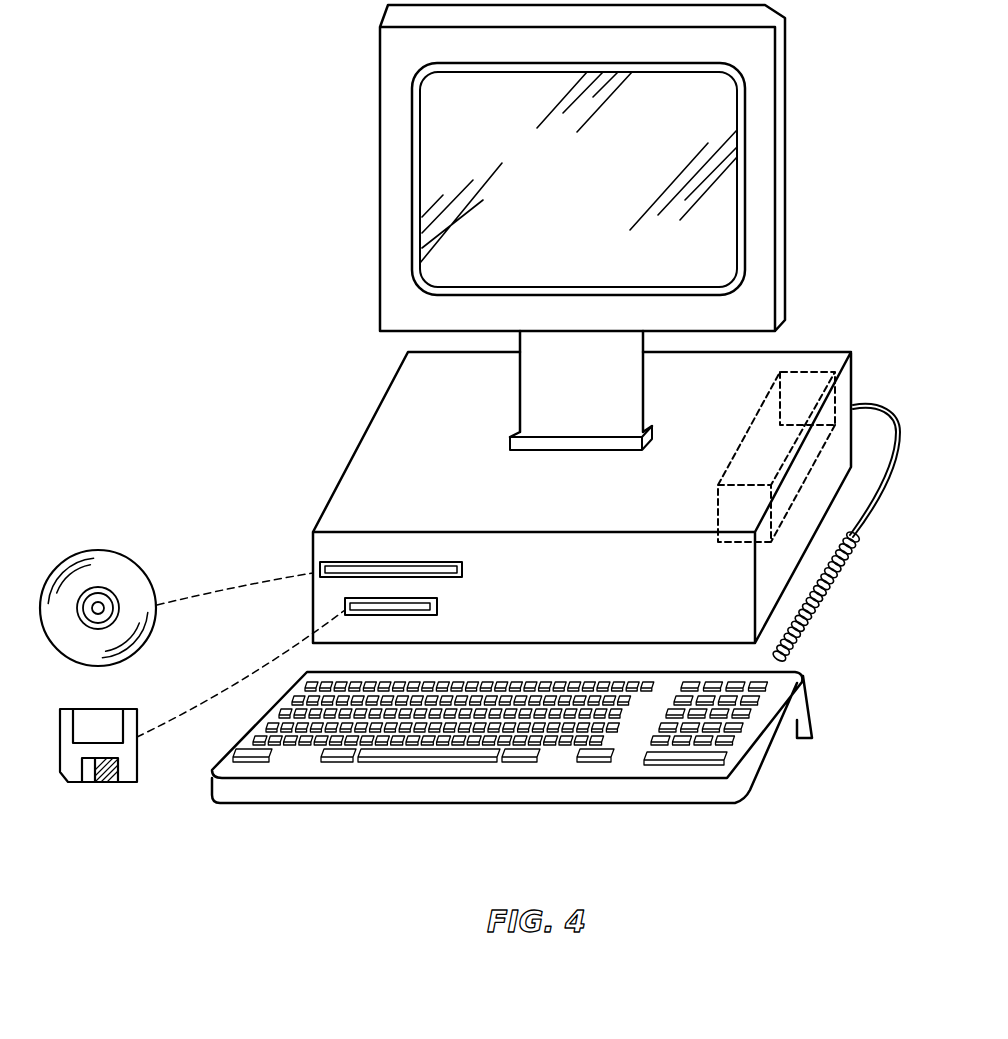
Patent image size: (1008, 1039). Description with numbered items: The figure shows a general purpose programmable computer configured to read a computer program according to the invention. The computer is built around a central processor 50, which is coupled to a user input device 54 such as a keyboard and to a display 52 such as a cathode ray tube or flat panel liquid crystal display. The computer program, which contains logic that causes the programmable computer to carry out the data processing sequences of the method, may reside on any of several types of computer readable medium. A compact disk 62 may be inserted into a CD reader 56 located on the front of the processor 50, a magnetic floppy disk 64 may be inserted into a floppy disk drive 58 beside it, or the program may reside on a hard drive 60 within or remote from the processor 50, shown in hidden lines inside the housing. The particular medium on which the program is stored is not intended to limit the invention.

The central processor 50 is at (358, 447).
The display 52 is at (786, 188).
The user input device 54 is at (457, 803).
The CD reader 56 is at (462, 570).
The floppy disk drive 58 is at (437, 607).
The hard drive 60 is at (717, 493).
The compact disk 62 is at (98, 550).
The magnetic floppy disk 64 is at (105, 782).